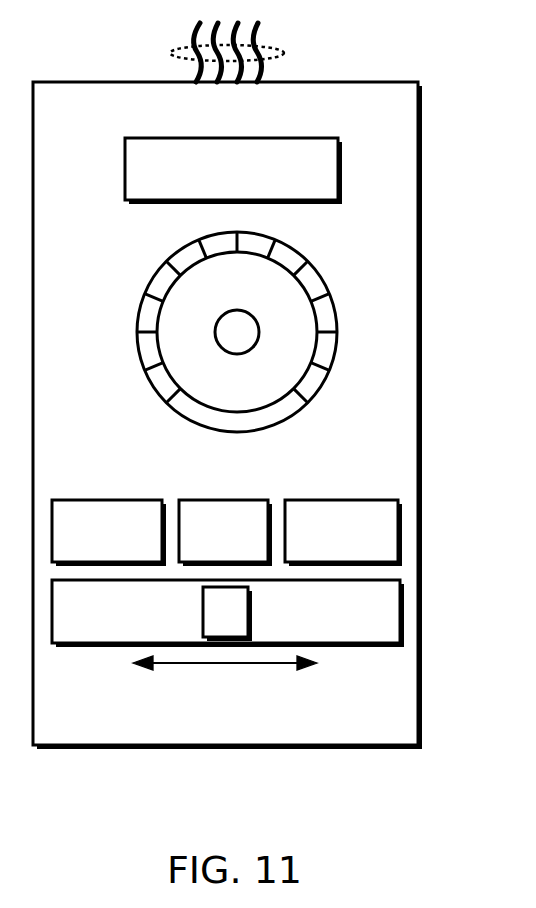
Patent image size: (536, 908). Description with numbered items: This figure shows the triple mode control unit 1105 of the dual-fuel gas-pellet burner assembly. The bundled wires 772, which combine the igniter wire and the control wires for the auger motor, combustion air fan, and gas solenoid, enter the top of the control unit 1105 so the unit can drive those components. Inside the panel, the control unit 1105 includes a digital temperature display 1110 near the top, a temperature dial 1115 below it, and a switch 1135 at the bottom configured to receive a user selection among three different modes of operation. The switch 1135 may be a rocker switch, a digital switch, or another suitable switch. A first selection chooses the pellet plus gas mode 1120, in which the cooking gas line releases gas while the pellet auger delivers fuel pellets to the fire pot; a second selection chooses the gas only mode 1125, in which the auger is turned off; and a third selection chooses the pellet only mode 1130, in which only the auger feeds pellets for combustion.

The bundled wires 772 is at (168, 53).
The triple mode control unit 1105 is at (370, 82).
The digital temperature display 1110 is at (272, 138).
The temperature dial 1115 is at (303, 257).
The pellet plus gas mode 1120 is at (72, 500).
The gas only mode 1125 is at (193, 500).
The pellet only mode 1130 is at (297, 500).
The switch 1135 is at (328, 648).